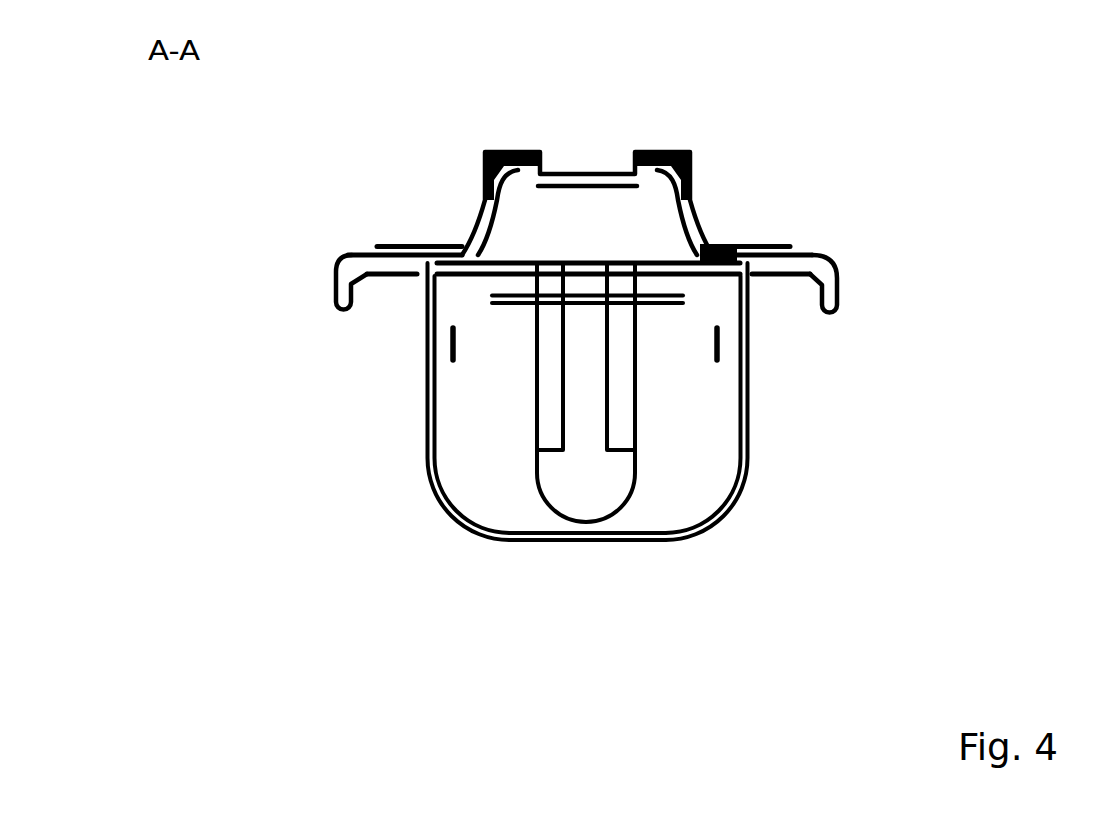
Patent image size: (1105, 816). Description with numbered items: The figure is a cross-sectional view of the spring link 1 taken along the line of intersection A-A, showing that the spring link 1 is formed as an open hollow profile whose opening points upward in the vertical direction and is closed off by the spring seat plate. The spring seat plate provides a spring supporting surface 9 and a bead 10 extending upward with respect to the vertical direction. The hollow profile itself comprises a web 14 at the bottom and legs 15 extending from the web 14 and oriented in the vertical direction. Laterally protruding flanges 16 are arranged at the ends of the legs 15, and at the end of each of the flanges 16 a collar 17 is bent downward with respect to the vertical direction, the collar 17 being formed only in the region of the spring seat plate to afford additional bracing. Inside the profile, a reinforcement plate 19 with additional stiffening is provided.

The spring link 1 is at (336, 620).
The spring supporting surface 9 is at (736, 245).
The bead 10 is at (588, 172).
The web 14 is at (588, 541).
The legs 15 is at (430, 393).
The flanges 16 is at (377, 248).
The collar 17 is at (340, 314).
The reinforcement plate 19 is at (580, 305).